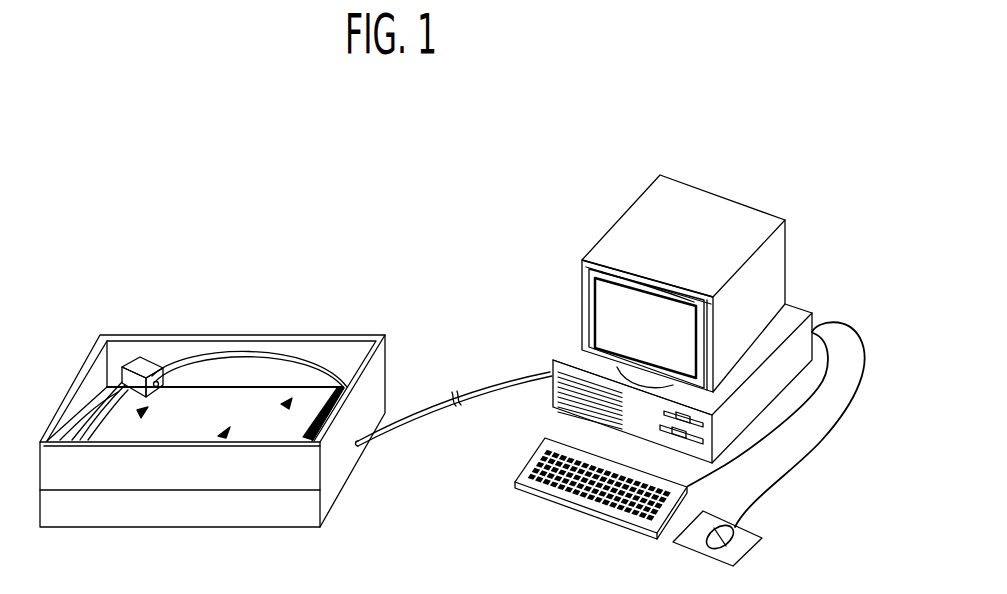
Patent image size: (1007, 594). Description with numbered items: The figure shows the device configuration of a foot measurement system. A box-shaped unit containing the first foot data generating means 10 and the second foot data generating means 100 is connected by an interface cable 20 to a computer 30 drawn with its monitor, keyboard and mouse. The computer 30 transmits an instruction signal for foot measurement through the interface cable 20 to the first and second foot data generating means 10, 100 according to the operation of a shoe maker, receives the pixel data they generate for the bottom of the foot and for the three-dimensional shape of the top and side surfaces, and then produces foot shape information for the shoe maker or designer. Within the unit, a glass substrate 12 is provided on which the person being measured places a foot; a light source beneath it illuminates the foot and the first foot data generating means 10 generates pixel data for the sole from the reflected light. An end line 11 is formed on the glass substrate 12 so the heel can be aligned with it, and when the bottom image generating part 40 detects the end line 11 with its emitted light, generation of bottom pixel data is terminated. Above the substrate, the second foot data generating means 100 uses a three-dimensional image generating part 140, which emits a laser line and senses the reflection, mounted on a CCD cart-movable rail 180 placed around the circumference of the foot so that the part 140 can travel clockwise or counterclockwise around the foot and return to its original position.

The first foot data generating means 10 is at (244, 408).
The second foot data generating means 100 is at (377, 363).
The end line 11 is at (113, 423).
The glass substrate 12 is at (220, 398).
The three-dimensional image generating part 140 is at (143, 366).
The CCD cart-movable rail 180 is at (289, 352).
The bottom image generating part 40 is at (335, 388).
The interface cable 20 is at (518, 375).
The computer 30 is at (730, 207).